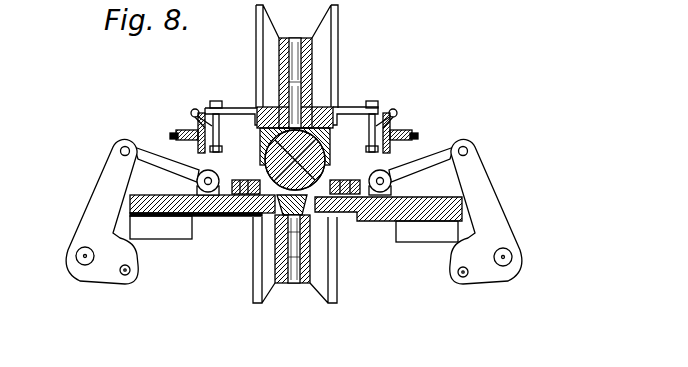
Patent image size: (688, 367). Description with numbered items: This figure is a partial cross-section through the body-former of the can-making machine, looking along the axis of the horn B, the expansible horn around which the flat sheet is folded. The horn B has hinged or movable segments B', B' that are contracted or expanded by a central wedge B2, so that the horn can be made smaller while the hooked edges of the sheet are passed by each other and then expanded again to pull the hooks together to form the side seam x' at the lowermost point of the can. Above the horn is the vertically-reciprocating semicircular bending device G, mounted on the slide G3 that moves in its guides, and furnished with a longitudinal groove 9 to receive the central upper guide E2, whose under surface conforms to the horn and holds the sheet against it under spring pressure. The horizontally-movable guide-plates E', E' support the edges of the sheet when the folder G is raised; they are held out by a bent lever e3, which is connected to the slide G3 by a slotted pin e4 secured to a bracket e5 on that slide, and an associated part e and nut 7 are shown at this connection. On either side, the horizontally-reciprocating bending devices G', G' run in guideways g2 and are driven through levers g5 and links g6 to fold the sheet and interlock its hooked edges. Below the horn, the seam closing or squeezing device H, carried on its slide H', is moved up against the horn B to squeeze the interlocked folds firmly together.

The hub flange 9 is at (273, 112).
The semicircular-shaped bending device G is at (351, 60).
The slide G3 is at (312, 65).
The central upper guide E2 is at (335, 109).
The hinged or movable segments B' is at (294, 146).
The horn B is at (330, 128).
The bracket e5 is at (372, 108).
The bent lever e3 is at (200, 114).
The rod e is at (393, 118).
The slotted pin e4 is at (401, 132).
The horizontally-movable guide-plates E' is at (300, 123).
The nuts 7 is at (330, 162).
The horizontally-reciprocating bending devices G' is at (296, 234).
The guideways g2 is at (427, 222).
The links g6 is at (420, 157).
The levers g5 is at (518, 221).
The central wedge B2 is at (278, 205).
The side seam x' is at (267, 250).
The seam closing or squeezing device H is at (251, 266).
The slide H' is at (319, 269).